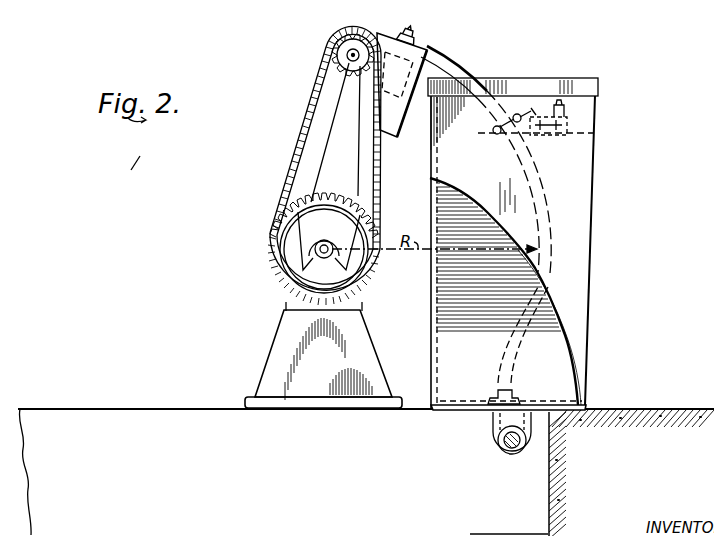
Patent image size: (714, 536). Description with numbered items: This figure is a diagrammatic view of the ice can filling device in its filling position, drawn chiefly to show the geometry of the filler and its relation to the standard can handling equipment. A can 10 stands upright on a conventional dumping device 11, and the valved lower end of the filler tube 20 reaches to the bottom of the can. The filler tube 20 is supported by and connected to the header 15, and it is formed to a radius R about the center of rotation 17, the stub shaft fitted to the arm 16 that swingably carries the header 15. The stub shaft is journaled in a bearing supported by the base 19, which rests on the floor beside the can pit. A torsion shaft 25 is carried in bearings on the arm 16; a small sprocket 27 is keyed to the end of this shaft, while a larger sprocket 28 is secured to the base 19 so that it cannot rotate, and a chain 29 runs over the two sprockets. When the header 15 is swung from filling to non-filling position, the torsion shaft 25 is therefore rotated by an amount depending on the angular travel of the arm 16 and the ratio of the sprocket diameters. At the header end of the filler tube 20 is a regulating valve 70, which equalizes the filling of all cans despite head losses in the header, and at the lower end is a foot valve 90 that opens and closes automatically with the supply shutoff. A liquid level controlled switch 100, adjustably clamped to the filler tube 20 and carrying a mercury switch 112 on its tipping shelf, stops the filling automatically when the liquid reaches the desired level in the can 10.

The can 10 is at (573, 193).
The dumping device 11 is at (557, 335).
The header 15 is at (427, 44).
The arm 16 is at (343, 128).
The stub shaft 17 is at (319, 253).
The base 19 is at (282, 353).
The filler tube 20 is at (458, 65).
The torsion shaft 25 is at (350, 58).
The small sprocket 27 is at (333, 49).
The larger sprocket 28 is at (283, 232).
The chain 29 is at (292, 165).
The regulating valve 70 is at (413, 33).
The foot valve 90 is at (487, 392).
The liquid level controlled switch 100 is at (567, 138).
The mercury switch 112 is at (565, 120).